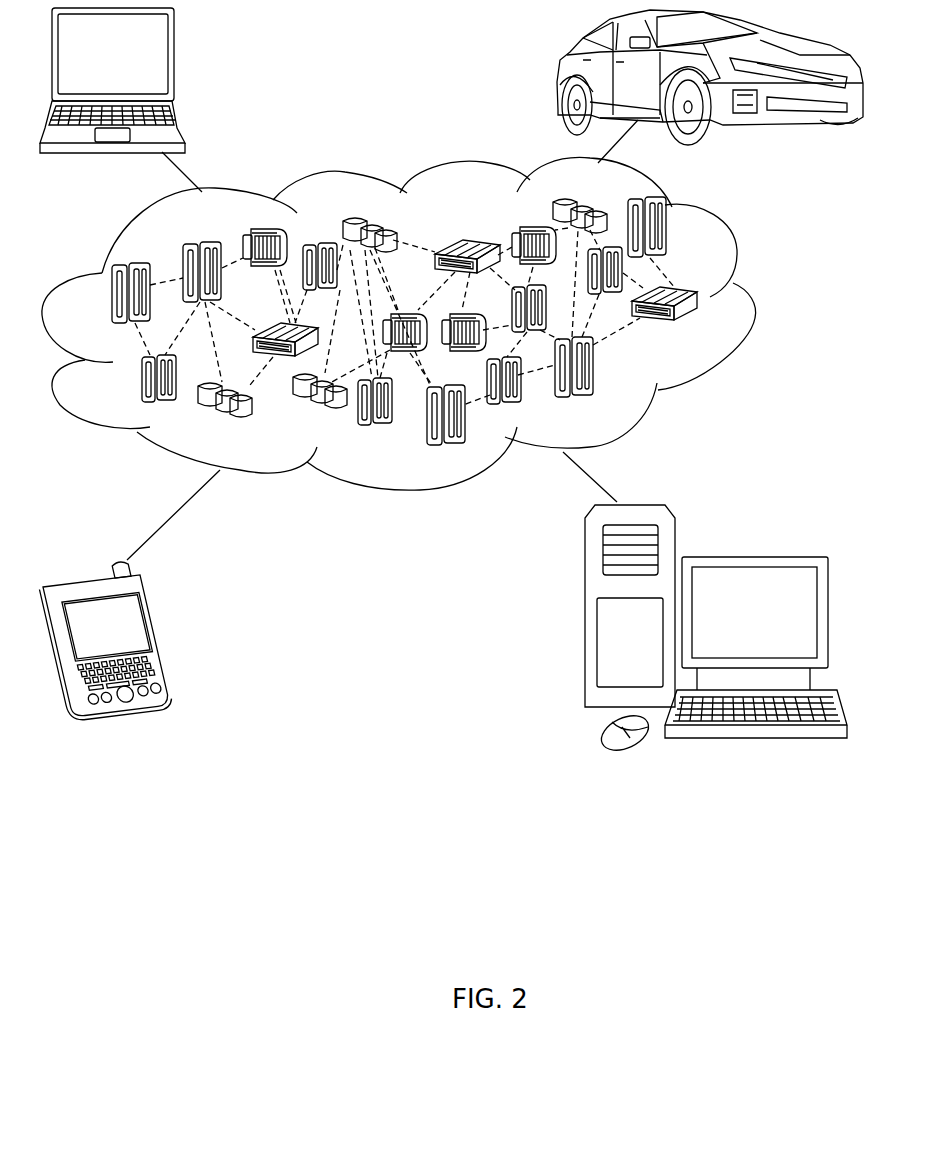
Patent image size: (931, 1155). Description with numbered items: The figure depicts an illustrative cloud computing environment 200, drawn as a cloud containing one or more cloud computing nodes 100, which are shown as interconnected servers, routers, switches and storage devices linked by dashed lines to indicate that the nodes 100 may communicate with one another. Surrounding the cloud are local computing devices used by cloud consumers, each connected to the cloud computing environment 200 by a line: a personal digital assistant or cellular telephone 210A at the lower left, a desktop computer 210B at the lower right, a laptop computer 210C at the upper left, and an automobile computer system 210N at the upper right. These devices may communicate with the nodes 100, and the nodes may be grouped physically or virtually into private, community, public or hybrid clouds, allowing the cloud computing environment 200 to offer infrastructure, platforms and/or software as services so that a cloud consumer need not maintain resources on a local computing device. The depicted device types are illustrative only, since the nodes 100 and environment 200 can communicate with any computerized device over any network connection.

The cloud computing nodes 100 is at (428, 323).
The cloud computing environment 200 is at (753, 302).
The personal digital assistant (PDA) or cellular telephone 210A is at (167, 637).
The desktop computer 210B is at (752, 556).
The laptop computer 210C is at (174, 61).
The automobile computer system 210N is at (558, 74).